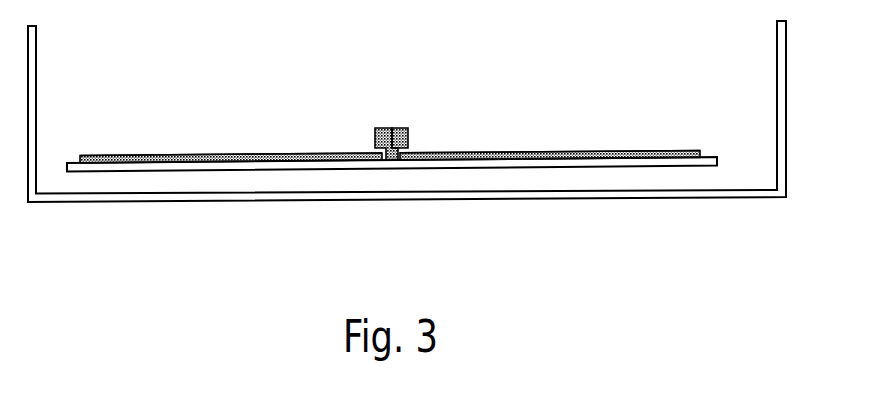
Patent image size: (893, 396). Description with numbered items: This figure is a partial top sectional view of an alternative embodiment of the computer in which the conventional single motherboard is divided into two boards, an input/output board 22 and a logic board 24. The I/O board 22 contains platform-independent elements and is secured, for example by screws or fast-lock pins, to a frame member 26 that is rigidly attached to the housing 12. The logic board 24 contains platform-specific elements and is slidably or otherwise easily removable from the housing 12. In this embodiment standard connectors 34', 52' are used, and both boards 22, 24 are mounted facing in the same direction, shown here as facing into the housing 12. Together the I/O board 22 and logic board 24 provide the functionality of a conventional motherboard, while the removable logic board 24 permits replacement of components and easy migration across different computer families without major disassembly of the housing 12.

The housing 12 is at (575, 192).
The input/output (I/O) board 22 is at (562, 152).
The logic board 24 is at (220, 155).
The frame member 26 is at (477, 168).
The standard connector 34' is at (369, 110).
The standard connector 52' is at (422, 98).